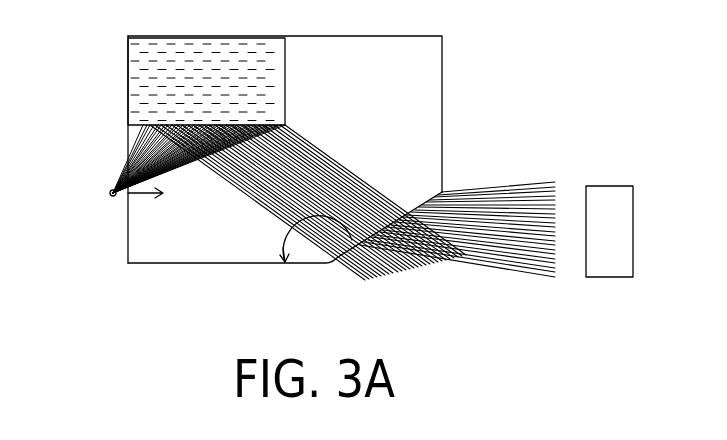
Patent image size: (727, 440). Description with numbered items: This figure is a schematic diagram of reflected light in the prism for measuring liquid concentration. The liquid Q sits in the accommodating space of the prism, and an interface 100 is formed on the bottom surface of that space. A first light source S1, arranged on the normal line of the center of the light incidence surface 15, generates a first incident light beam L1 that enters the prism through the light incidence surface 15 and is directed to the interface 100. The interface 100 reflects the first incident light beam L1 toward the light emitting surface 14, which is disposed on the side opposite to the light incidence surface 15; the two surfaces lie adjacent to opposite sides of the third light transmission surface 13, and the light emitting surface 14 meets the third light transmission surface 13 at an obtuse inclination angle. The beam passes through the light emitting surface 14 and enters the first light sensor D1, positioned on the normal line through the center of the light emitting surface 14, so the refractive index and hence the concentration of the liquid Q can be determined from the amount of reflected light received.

The interface 100 is at (210, 125).
The liquid Q is at (287, 73).
The first incident light beam L1 is at (152, 132).
The first light source S1 is at (110, 197).
The light incidence surface 15 is at (127, 262).
The third light transmission surface 13 is at (240, 263).
The light emitting surface 14 is at (350, 246).
The first light sensor D1 is at (607, 273).